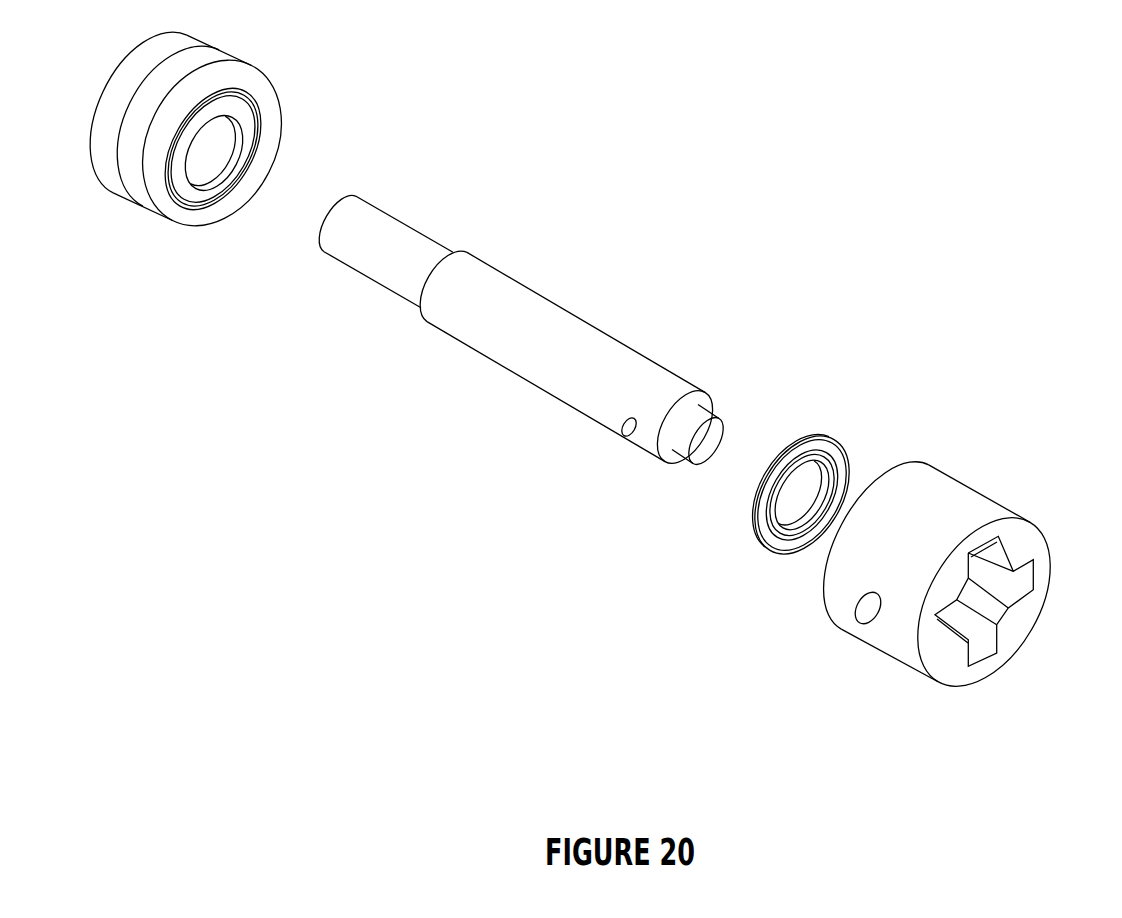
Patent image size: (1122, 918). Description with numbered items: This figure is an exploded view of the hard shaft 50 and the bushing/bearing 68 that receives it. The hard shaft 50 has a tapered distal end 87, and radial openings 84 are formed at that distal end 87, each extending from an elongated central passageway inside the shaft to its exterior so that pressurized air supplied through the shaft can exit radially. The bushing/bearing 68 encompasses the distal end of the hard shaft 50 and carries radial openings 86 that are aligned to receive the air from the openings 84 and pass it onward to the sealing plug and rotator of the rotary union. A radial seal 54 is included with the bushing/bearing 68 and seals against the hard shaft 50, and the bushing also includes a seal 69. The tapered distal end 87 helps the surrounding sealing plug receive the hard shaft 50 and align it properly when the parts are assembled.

The radial seal 54 is at (176, 232).
The hard shaft 50 is at (553, 394).
The radial openings 84 is at (627, 433).
The distal end 87 is at (700, 412).
The seal 69 is at (758, 542).
The bushing/bearing 68 is at (998, 503).
The radial openings 86 is at (857, 612).